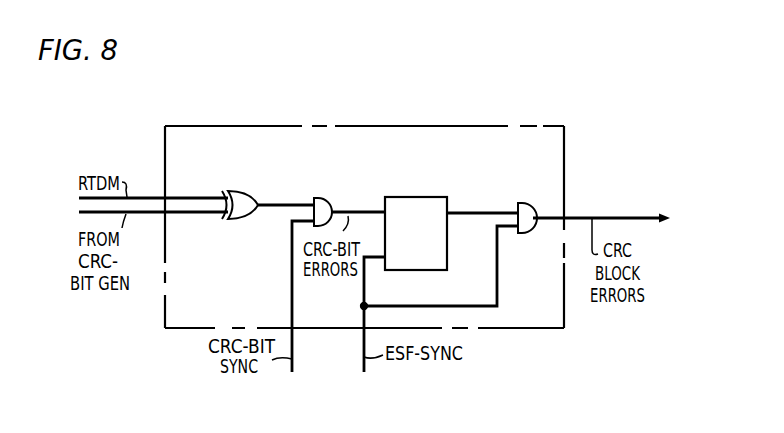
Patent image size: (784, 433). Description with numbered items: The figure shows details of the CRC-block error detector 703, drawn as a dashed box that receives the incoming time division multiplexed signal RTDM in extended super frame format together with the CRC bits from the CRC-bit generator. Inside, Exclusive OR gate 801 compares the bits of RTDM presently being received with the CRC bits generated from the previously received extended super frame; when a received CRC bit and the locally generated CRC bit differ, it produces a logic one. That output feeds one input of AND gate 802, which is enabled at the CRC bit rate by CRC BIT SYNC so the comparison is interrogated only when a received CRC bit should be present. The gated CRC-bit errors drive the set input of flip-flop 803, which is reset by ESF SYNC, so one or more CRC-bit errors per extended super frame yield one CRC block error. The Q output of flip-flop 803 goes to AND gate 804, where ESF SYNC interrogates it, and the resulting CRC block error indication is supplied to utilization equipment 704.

The CRC-block error detector 703 is at (486, 126).
The Exclusive OR gate 801 is at (250, 193).
The AND gate 802 is at (323, 198).
The flip-flop 803 is at (405, 197).
The AND gate 804 is at (530, 203).
The utilization equipment 704 is at (647, 216).